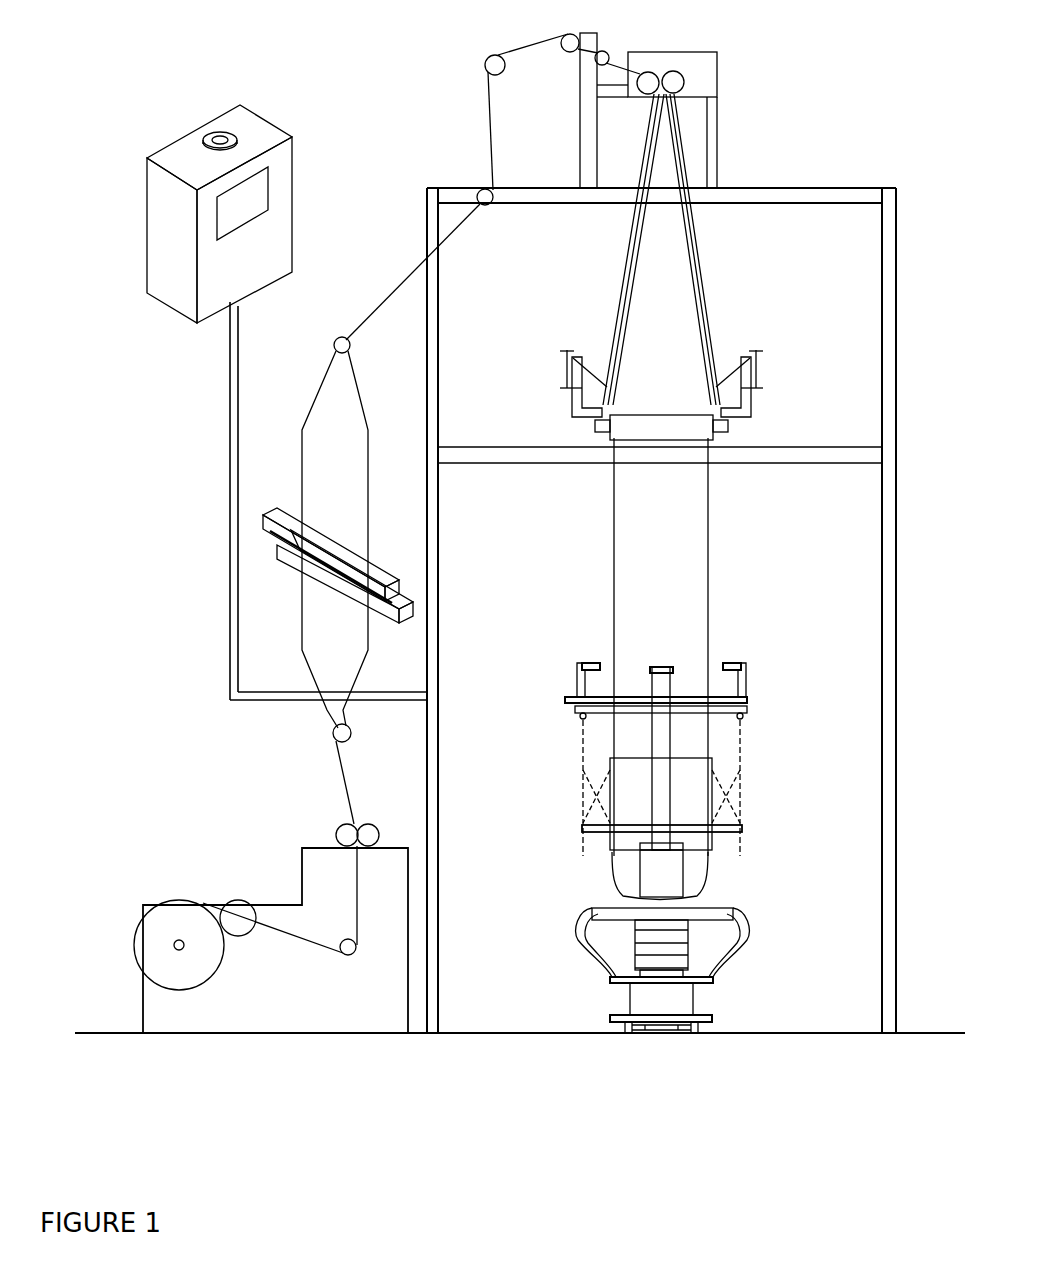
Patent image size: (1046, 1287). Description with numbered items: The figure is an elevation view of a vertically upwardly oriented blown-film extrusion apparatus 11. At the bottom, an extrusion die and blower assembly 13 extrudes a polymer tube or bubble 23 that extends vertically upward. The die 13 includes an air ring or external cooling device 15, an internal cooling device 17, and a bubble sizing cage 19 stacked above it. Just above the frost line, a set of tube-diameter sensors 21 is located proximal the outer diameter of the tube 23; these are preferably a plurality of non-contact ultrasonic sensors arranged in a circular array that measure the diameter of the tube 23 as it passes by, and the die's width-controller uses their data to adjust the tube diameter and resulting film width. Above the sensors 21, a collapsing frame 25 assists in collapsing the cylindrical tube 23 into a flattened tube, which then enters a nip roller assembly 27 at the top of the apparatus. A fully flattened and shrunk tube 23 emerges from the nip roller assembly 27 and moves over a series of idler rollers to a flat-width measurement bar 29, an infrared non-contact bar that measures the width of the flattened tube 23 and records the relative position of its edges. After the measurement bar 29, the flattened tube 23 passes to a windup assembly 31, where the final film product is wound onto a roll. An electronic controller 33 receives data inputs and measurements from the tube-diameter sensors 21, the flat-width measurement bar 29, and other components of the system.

The blown-film extrusion apparatus 11 is at (820, 130).
The extrusion die and blower assembly 13 is at (670, 826).
The air ring or external cooling device 15 is at (622, 913).
The internal cooling device 17 is at (657, 865).
The bubble sizing cage 19 is at (637, 783).
The tube-diameter sensors 21 is at (740, 660).
The polymer tube or bubble 23 is at (310, 443).
The collapsing frame 25 is at (726, 309).
The nip roller assembly 27 is at (700, 62).
The flat-width measurement bar 29 is at (292, 543).
The windup assembly 31 is at (163, 876).
The electronic controller 33 is at (273, 125).